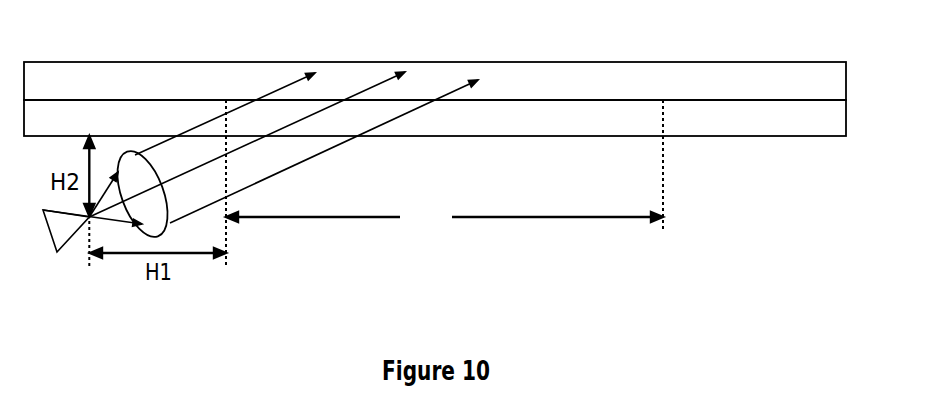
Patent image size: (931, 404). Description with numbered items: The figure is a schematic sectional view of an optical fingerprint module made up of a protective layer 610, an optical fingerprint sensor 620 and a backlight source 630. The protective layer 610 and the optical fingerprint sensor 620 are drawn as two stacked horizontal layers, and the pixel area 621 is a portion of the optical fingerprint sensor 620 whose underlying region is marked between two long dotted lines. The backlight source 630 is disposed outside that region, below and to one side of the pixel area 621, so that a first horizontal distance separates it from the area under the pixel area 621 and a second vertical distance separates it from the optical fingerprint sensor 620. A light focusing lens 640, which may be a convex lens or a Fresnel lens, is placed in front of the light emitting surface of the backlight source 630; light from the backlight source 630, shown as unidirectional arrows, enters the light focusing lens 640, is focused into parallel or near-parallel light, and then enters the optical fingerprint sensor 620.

The protective layer 610 is at (705, 77).
The optical fingerprint sensor 620 is at (705, 125).
The pixel area 621 is at (444, 219).
The backlight source 630 is at (62, 236).
The light focusing lens 640 is at (158, 227).